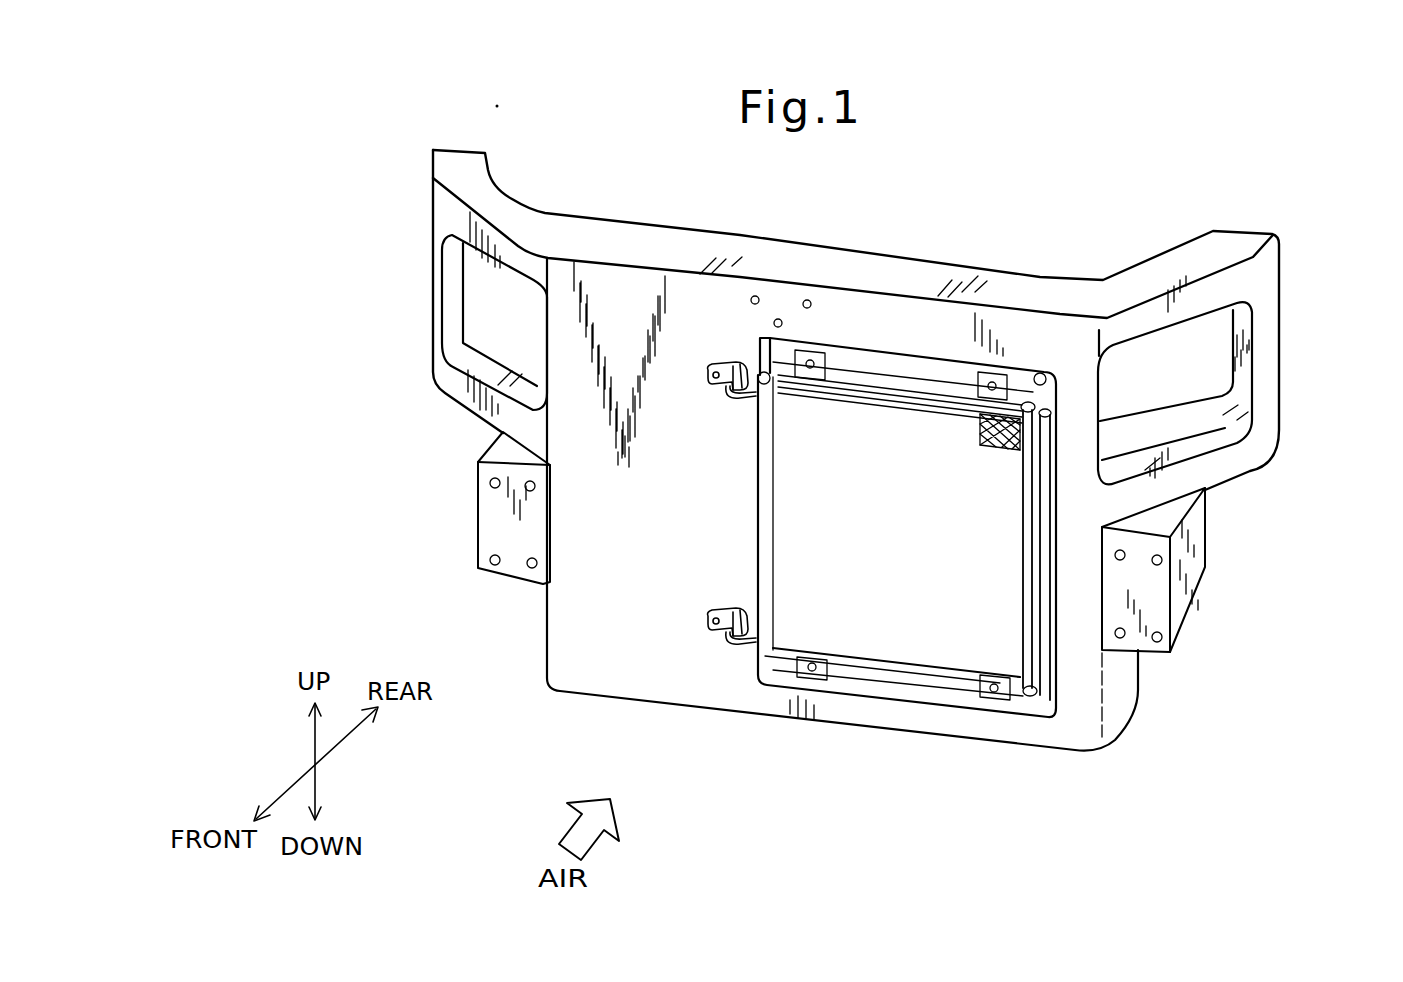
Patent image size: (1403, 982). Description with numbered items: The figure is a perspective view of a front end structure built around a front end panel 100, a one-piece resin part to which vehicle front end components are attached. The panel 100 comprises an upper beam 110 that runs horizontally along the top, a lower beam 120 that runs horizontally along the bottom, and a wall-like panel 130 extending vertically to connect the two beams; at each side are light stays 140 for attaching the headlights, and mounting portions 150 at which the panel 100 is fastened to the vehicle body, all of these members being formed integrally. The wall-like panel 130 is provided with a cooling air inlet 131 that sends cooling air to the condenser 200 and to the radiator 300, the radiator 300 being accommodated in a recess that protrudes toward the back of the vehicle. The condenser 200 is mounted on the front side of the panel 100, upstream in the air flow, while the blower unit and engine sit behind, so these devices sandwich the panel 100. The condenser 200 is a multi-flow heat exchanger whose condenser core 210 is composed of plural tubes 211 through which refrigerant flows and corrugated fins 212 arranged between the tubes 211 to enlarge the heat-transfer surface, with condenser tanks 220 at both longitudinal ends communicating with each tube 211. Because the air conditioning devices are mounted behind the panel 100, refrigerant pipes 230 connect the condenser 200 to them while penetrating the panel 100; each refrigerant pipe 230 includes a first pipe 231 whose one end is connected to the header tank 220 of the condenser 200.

The front end panel 100 is at (1010, 298).
The upper beam 110 is at (898, 318).
The lower beam 120 is at (897, 722).
The wall-like panel 130 is at (560, 640).
The cooling air inlet 131 is at (768, 336).
The light stays 140 is at (436, 273).
The mounting portions 150 is at (483, 526).
The condenser 200 is at (1047, 660).
The condenser core 210 is at (982, 553).
The tubes 211 is at (978, 456).
The corrugated fins 212 is at (983, 452).
The condenser tanks 220 is at (767, 560).
The refrigerant pipes 230 is at (728, 390).
The first pipe 231 is at (735, 645).
The radiator 300 is at (1035, 528).